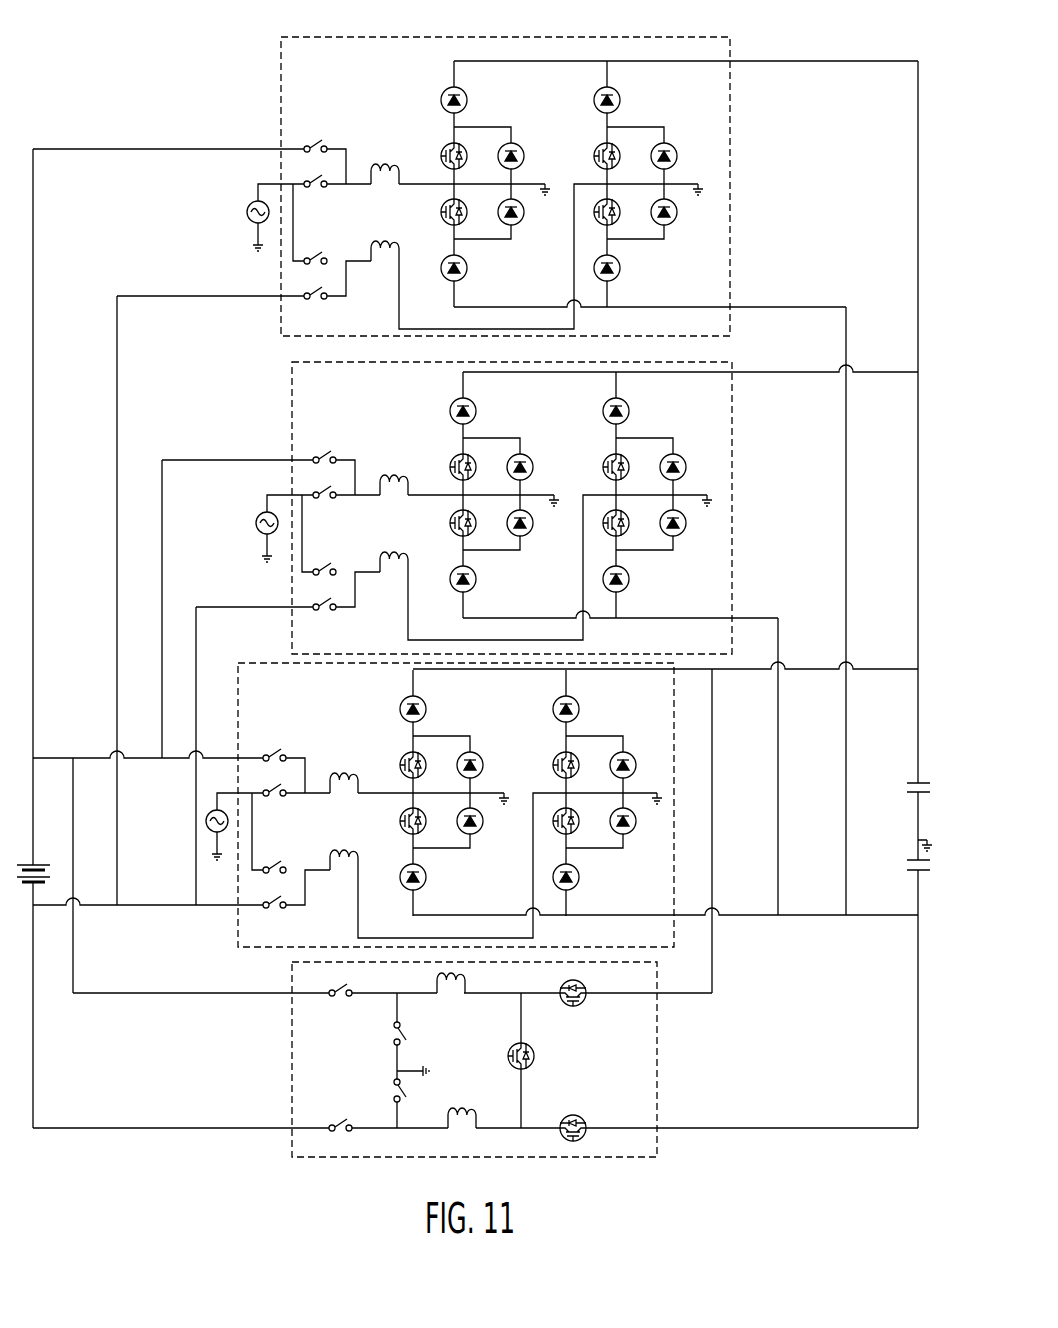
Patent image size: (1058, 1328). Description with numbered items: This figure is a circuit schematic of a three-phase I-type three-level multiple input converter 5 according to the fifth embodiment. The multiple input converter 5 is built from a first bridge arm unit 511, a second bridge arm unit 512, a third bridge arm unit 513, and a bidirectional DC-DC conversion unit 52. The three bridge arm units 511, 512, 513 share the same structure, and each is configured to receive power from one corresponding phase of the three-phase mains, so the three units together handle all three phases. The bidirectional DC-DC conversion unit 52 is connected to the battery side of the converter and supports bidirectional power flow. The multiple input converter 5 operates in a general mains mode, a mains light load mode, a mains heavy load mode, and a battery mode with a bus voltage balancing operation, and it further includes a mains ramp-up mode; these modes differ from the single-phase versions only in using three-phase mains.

The multiple input converter 5 is at (86, 80).
The first bridge arm unit 511 is at (730, 103).
The second bridge arm unit 512 is at (733, 443).
The third bridge arm unit 513 is at (673, 895).
The bidirectional DC-DC conversion unit 52 is at (657, 1135).